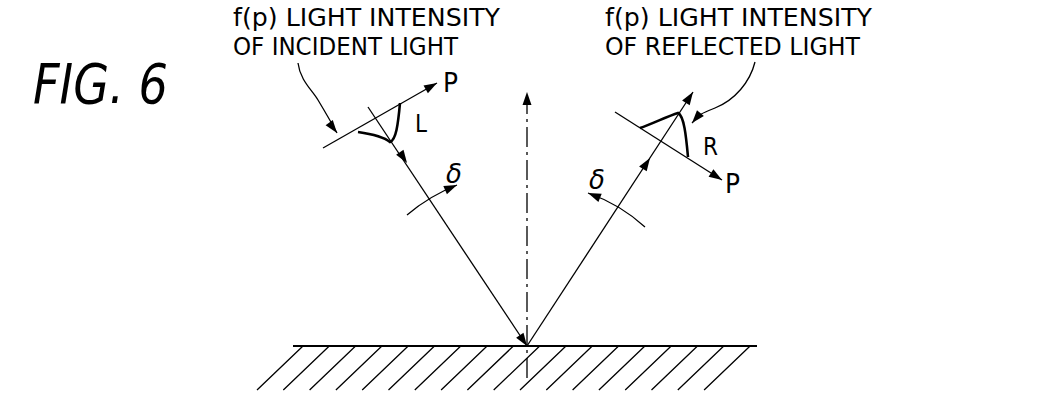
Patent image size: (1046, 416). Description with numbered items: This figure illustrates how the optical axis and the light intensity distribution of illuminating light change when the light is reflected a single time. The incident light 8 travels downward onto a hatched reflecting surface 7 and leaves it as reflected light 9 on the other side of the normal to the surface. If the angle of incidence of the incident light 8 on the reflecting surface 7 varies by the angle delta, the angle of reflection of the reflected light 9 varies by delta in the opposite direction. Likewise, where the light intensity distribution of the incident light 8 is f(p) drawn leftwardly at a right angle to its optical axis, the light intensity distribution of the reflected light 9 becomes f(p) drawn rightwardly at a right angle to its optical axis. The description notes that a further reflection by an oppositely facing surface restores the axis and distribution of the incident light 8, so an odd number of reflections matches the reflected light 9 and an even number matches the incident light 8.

The reflecting surface 7 is at (717, 346).
The incident light 8 is at (458, 242).
The reflected light 9 is at (602, 233).